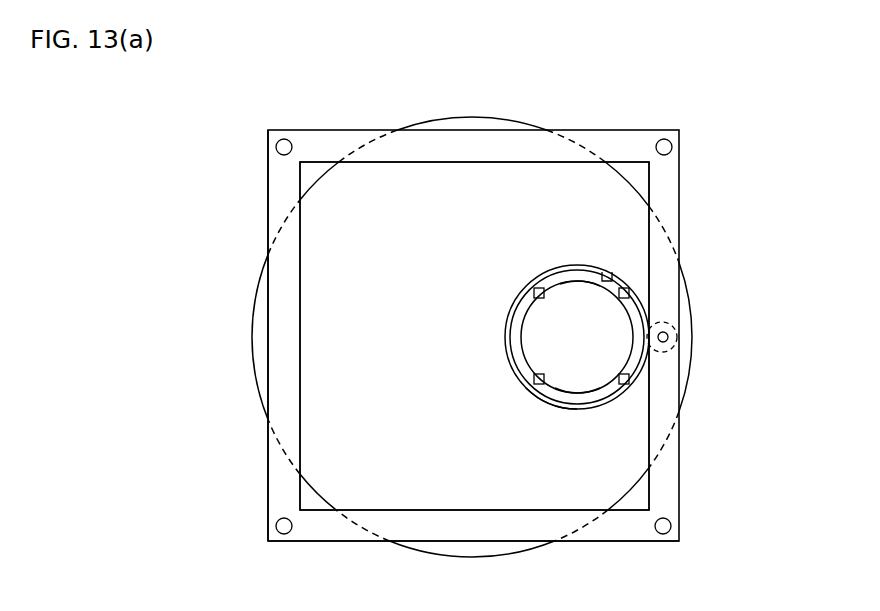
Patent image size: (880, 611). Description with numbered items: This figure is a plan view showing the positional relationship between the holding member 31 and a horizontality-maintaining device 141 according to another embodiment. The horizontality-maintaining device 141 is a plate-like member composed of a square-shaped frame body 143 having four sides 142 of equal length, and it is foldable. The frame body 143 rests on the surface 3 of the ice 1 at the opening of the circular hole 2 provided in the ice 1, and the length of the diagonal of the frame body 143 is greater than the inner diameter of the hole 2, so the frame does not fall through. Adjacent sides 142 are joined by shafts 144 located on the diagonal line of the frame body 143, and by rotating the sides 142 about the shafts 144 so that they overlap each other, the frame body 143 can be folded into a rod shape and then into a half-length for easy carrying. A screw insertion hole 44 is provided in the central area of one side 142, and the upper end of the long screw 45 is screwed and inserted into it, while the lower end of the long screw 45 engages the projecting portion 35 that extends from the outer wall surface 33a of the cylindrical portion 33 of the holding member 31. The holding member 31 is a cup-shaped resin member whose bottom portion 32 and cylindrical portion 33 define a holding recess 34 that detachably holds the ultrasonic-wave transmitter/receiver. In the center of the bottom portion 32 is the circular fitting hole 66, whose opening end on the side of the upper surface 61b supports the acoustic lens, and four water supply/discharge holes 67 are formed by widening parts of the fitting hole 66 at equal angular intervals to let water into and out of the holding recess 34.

The ice 1 is at (245, 243).
The circular hole 2 is at (256, 346).
The surface 3 is at (324, 183).
The holding member 31 is at (505, 336).
The bottom portion 32 is at (566, 283).
The cylindrical portion 33 is at (545, 270).
The outer wall surface 33a is at (538, 411).
The holding recess 34 is at (610, 276).
The projecting portion 35 is at (681, 246).
The screw insertion hole 44 is at (668, 337).
The long screw 45 is at (670, 328).
The upper surface 61b is at (581, 391).
The fitting hole 66 is at (596, 283).
The water supply/discharge hole 67 is at (535, 297).
The horizontality-maintaining device 141 is at (268, 189).
The side 142 is at (341, 149).
The frame body 143 is at (268, 491).
The shaft 144 is at (284, 147).